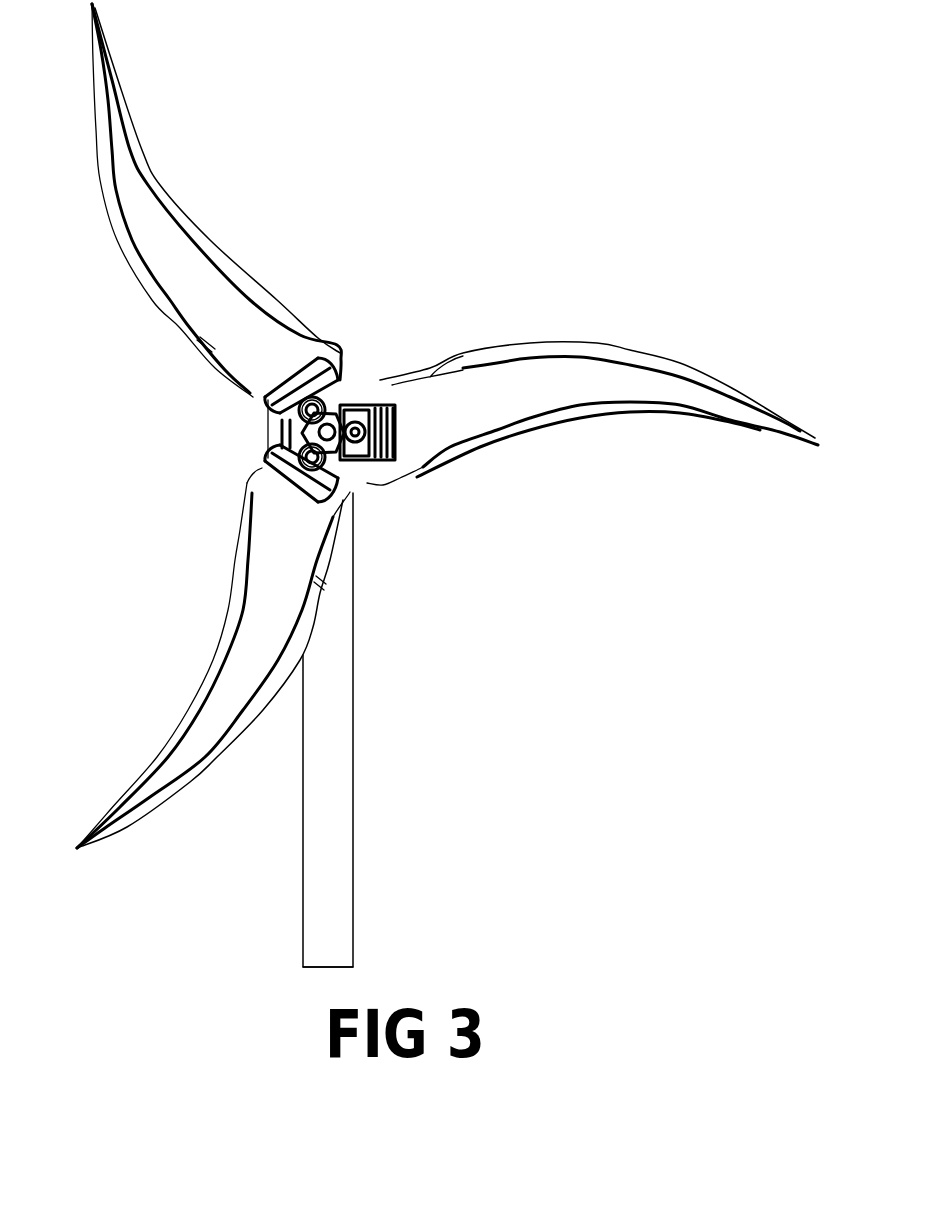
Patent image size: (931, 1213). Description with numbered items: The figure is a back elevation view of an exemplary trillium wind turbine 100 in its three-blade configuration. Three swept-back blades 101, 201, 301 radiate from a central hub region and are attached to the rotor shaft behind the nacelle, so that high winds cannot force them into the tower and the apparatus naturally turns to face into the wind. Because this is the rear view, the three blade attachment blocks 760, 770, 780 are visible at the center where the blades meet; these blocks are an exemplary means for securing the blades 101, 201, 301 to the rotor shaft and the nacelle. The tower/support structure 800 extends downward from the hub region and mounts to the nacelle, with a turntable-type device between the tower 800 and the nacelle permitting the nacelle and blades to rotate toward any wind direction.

The trillium wind turbine 100 is at (144, 961).
The blade 101 is at (560, 282).
The blade 201 is at (191, 140).
The blade 301 is at (178, 588).
The blade attachment block 760 is at (380, 352).
The blade attachment block 770 is at (245, 438).
The blade attachment block 780 is at (374, 500).
The tower/support structure 800 is at (350, 813).